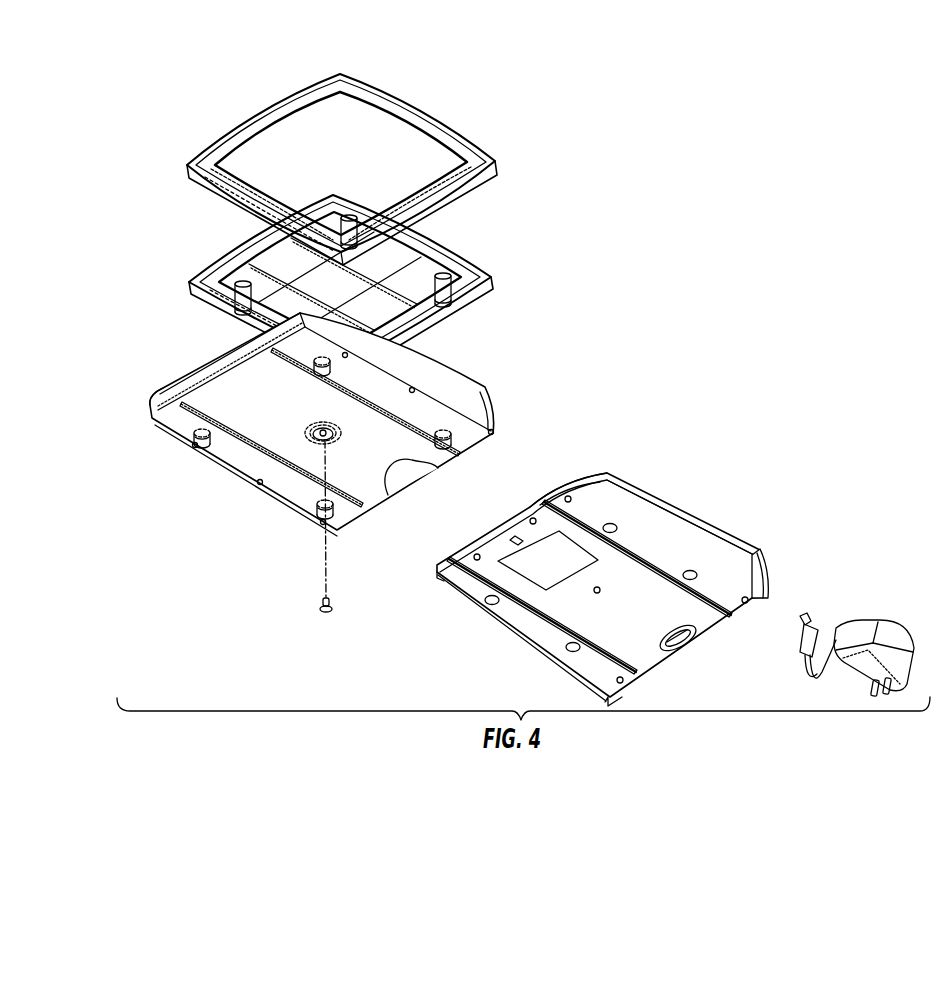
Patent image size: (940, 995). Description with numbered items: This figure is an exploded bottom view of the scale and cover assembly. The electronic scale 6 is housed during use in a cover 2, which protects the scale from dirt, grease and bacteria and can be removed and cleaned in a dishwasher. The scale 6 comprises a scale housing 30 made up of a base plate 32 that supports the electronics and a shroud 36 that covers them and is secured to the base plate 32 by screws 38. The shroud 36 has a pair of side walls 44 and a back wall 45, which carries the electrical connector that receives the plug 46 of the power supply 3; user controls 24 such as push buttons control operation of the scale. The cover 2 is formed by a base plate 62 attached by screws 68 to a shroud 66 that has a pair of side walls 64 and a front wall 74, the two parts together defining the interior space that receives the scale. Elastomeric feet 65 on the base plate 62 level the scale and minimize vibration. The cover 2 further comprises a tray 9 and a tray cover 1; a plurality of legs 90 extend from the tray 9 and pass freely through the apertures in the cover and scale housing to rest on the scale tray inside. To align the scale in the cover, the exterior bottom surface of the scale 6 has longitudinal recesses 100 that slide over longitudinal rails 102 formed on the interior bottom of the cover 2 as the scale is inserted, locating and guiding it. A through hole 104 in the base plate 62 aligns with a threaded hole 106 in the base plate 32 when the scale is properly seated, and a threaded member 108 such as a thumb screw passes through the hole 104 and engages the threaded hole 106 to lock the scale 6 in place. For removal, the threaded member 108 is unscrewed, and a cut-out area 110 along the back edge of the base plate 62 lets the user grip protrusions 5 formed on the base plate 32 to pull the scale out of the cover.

The tray cover 1 is at (478, 176).
The tray 9 is at (222, 262).
The legs 90 is at (255, 297).
The cover 2 is at (134, 437).
The side walls 64 is at (466, 385).
The shroud 66 is at (153, 395).
The front wall 74 is at (228, 378).
The base plate 62 is at (228, 455).
The elastomeric feet 65 is at (314, 367).
The screws 68 is at (347, 359).
The longitudinal rails 102 is at (283, 455).
The through hole 104 is at (322, 439).
The cut-out area 110 is at (400, 487).
The threaded member 108 is at (331, 612).
The electronic scale 6 is at (773, 530).
The scale housing 30 is at (724, 526).
The user controls 24 is at (543, 490).
The shroud 36 is at (603, 470).
The side walls 44 is at (686, 530).
The back wall 45 is at (764, 572).
The base plate 32 is at (588, 658).
The longitudinal recesses 100 is at (652, 574).
The screws 38 is at (567, 505).
The threaded hole 106 is at (599, 589).
The protrusions 5 is at (684, 650).
The power supply 3 is at (884, 632).
The plug 46 is at (803, 625).